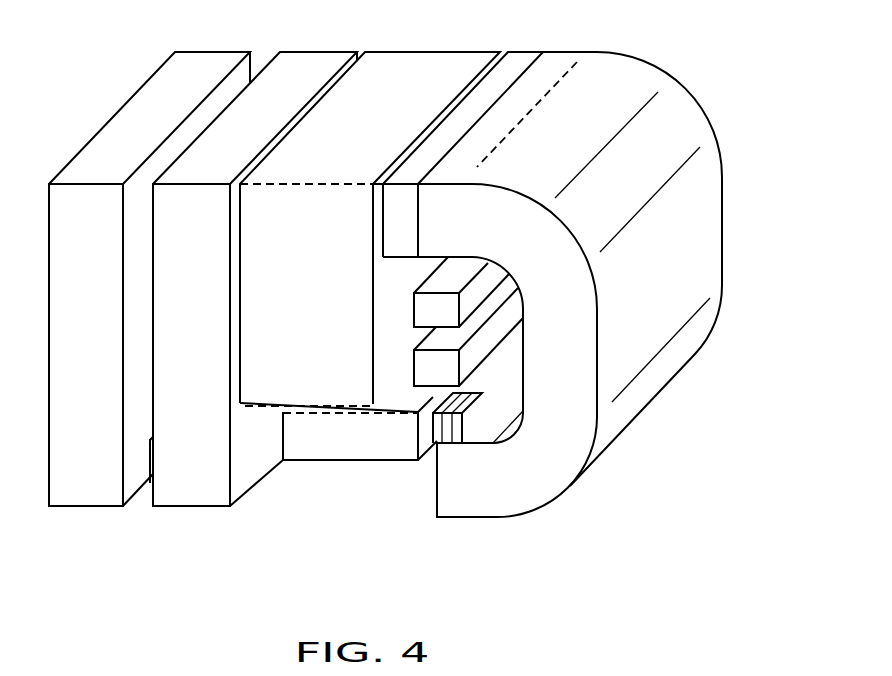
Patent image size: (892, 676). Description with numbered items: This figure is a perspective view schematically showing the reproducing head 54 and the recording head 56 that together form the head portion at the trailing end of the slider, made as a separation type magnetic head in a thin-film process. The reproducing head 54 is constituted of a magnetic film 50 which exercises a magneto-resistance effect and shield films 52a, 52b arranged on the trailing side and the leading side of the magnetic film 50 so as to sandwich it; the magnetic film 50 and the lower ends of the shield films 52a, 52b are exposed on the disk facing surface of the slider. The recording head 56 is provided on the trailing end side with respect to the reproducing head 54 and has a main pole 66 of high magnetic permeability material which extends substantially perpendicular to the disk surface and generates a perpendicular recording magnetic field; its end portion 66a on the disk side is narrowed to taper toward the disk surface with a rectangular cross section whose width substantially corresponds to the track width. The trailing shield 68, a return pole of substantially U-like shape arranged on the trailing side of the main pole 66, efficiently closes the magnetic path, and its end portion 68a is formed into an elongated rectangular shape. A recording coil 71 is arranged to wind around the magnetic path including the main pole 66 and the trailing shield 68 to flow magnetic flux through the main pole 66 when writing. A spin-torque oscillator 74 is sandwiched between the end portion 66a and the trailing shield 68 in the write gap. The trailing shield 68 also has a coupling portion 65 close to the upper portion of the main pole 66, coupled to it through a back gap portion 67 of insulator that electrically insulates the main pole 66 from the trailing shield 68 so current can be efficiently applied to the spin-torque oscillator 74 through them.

The reproducing head 54 is at (130, 143).
The shield film 52a is at (206, 492).
The shield film 52b is at (82, 492).
The magnetic film 50 is at (150, 464).
The recording head 56 is at (428, 527).
The main pole 66 is at (291, 383).
The end portion 66a is at (303, 450).
The back gap portion 67 is at (523, 63).
The coupling portion 65 is at (523, 98).
The trailing shield 68 is at (712, 252).
The end portion 68a is at (494, 506).
The recording coil 71 is at (488, 277).
The spin-torque oscillator 74 is at (482, 393).